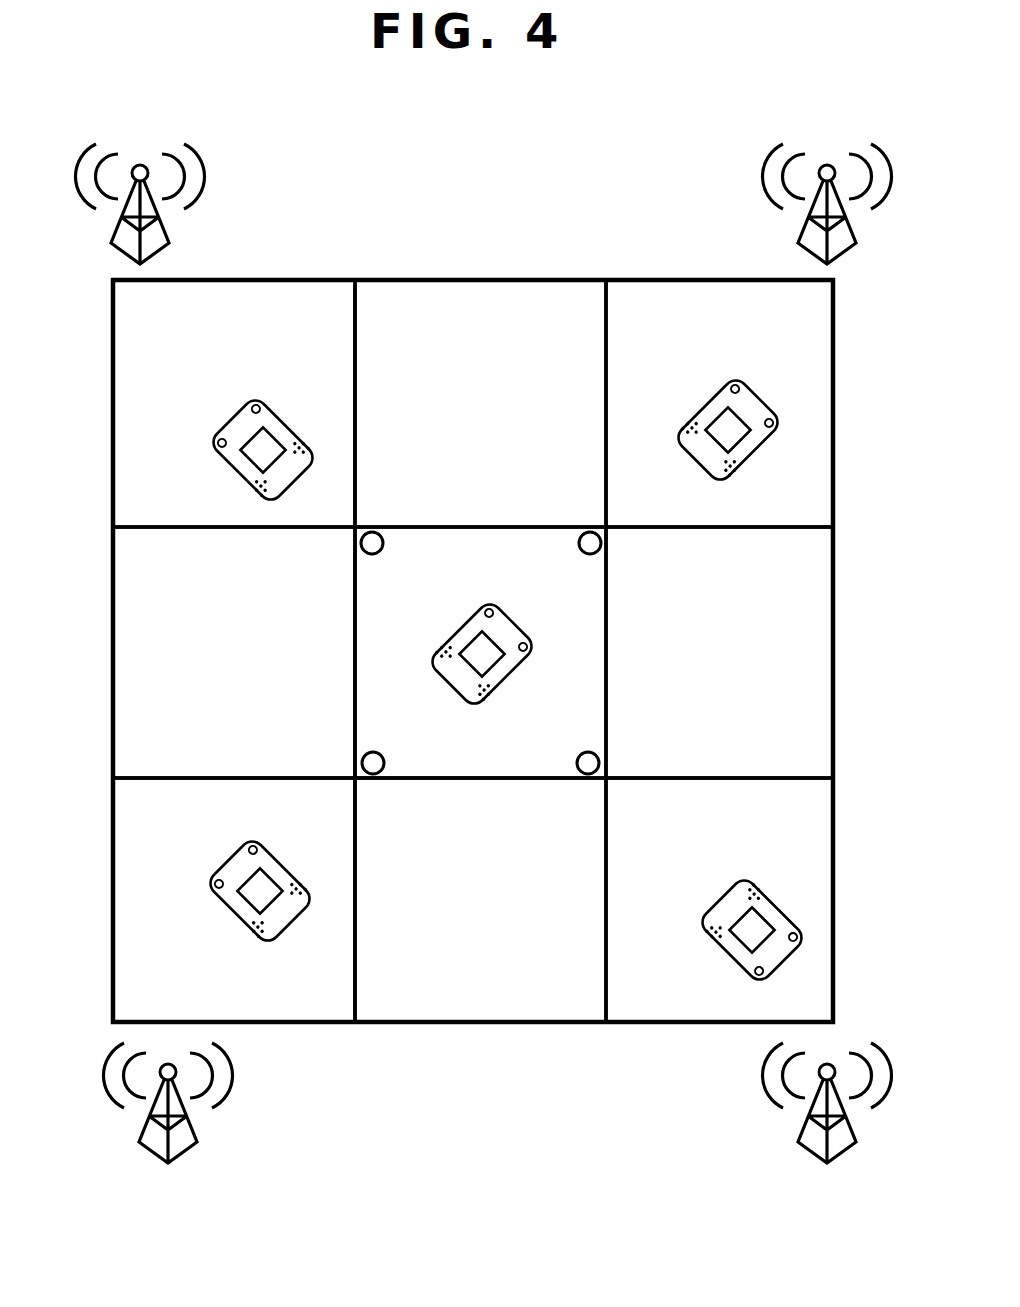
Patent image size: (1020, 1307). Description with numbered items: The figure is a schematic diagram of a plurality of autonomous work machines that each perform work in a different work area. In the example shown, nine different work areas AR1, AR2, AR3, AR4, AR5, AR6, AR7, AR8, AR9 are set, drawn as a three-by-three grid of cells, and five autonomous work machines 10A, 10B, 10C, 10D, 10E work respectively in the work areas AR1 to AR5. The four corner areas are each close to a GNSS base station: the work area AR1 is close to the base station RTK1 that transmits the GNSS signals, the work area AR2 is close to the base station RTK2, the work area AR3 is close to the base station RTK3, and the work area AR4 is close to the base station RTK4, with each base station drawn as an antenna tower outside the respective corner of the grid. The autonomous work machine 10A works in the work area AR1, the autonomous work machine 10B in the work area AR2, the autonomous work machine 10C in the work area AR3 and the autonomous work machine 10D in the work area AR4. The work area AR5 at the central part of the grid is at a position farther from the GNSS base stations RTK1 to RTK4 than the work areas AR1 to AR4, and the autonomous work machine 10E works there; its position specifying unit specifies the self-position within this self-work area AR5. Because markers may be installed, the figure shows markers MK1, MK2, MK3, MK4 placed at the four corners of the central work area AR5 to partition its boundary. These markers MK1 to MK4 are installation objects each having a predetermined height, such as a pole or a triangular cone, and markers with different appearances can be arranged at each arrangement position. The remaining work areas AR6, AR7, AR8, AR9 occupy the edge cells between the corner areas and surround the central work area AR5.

The autonomous work machine 10A is at (237, 407).
The autonomous work machine 10B is at (707, 392).
The autonomous work machine 10C is at (220, 867).
The autonomous work machine 10D is at (715, 910).
The autonomous work machine 10E is at (478, 636).
The work area AR1 is at (146, 446).
The work area AR2 is at (801, 473).
The work area AR3 is at (150, 898).
The work area AR4 is at (797, 855).
The work area AR5 is at (575, 632).
The work area AR6 is at (485, 320).
The work area AR7 is at (134, 705).
The work area AR8 is at (801, 695).
The work area AR9 is at (463, 992).
The marker MK1 is at (374, 542).
The marker MK2 is at (589, 542).
The marker MK3 is at (374, 762).
The marker MK4 is at (587, 762).
The base station RTK1 is at (163, 229).
The base station RTK2 is at (805, 226).
The base station RTK3 is at (190, 1140).
The base station RTK4 is at (805, 1138).